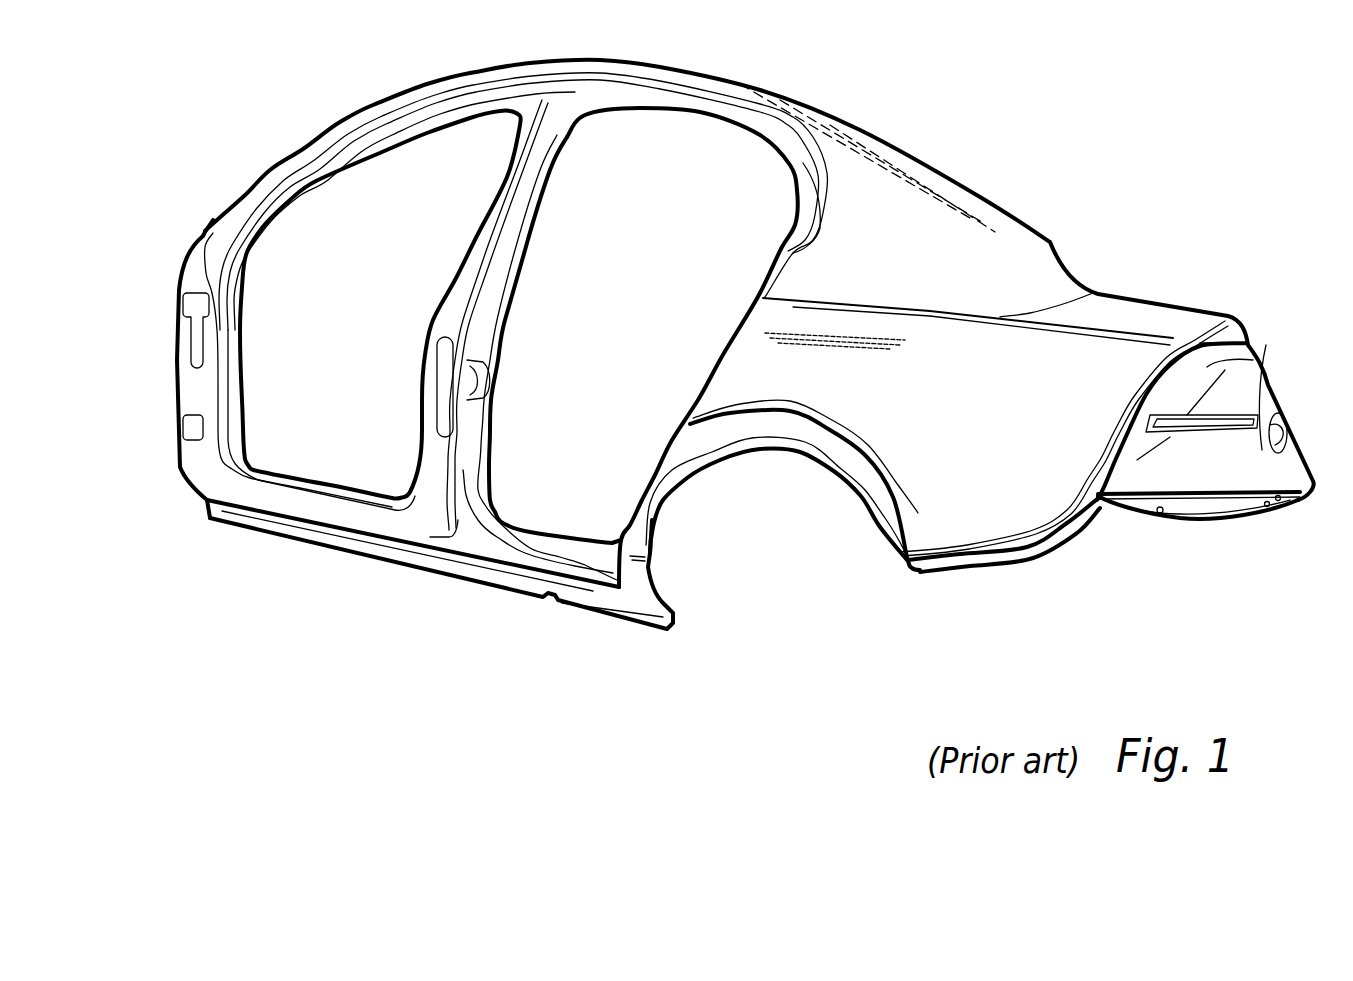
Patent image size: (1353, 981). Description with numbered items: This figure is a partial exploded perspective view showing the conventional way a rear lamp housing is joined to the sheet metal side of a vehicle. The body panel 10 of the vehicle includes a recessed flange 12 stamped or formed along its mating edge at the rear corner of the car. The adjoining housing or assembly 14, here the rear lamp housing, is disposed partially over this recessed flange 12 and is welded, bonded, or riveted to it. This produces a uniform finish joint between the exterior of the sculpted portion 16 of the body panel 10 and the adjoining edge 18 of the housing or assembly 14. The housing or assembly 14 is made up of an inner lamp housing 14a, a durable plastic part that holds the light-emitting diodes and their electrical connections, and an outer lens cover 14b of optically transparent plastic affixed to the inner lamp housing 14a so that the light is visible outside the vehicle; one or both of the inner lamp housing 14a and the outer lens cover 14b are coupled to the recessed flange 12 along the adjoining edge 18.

The body panel 10 is at (1143, 283).
The recessed flange 12 is at (1102, 463).
The housing or assembly 14 is at (1187, 547).
The inner lamp housing 14a is at (1237, 547).
The outer lens cover 14b is at (1223, 343).
The sculpted portion 16 is at (967, 423).
The adjoining edge 18 is at (1133, 450).